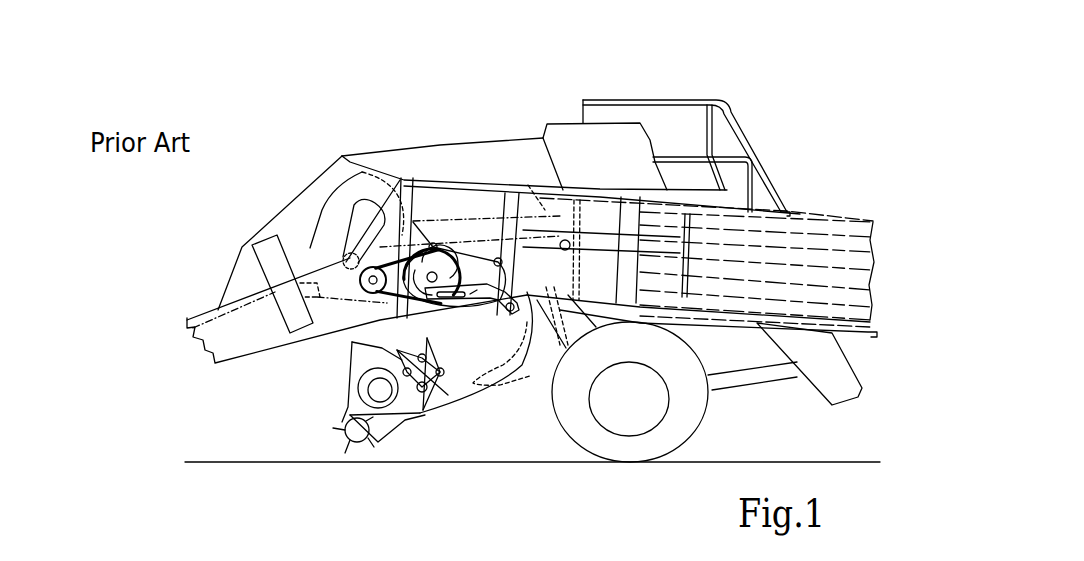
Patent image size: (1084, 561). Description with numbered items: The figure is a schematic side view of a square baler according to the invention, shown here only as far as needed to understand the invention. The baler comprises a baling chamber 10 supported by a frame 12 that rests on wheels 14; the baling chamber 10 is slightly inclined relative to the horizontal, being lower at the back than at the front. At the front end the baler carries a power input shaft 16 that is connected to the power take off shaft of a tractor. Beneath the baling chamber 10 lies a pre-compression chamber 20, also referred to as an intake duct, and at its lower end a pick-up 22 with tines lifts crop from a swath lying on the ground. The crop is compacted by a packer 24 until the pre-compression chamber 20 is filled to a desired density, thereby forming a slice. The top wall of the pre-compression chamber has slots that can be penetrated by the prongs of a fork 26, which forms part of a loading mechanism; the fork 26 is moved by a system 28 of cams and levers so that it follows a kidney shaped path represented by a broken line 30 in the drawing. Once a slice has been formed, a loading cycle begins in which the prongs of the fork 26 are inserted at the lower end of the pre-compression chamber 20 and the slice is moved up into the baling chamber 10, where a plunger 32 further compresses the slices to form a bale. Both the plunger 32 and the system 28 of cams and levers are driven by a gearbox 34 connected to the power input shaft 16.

The baling chamber 10 is at (628, 245).
The frame 12 is at (768, 370).
The wheels 14 is at (672, 410).
The power input shaft 16 is at (195, 317).
The pre-compression chamber 20 is at (462, 403).
The pick-up 22 is at (353, 430).
The packer 24 is at (437, 373).
The fork 26 is at (500, 300).
The system of cams and levers 28 is at (433, 218).
The broken line 30 is at (612, 224).
The plunger 32 is at (528, 185).
The gearbox 34 is at (360, 218).